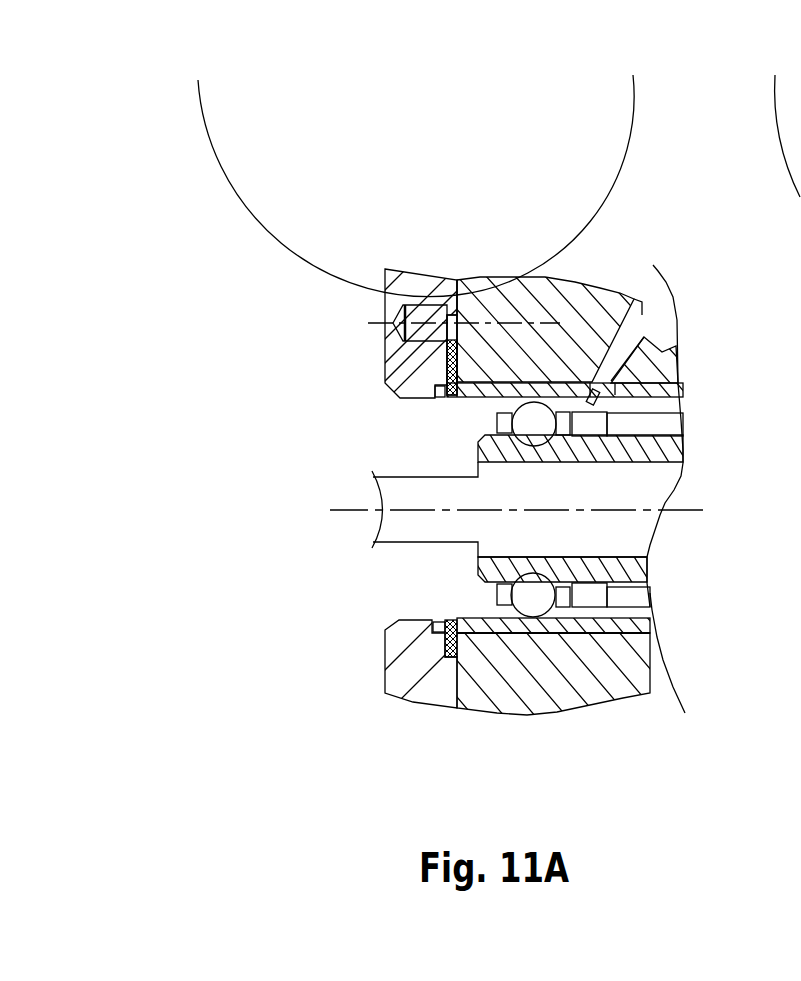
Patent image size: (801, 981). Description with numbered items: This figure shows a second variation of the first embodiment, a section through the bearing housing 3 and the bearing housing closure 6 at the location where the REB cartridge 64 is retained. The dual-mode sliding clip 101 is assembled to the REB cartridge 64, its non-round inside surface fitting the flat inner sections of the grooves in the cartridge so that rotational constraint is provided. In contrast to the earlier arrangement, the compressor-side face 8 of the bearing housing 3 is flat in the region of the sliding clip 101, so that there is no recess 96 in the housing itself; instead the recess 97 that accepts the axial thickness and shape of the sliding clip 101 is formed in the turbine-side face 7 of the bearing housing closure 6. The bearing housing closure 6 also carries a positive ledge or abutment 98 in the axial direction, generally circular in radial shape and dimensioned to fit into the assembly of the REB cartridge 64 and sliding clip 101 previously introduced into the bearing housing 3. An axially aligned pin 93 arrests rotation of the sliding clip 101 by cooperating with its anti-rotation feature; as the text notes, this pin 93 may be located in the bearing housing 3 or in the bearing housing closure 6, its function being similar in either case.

The bearing housing 3 is at (613, 668).
The bearing housing closure 6 is at (412, 656).
The turbine-side face 7 is at (493, 167).
The compressor-side face 8 is at (547, 169).
The REB cartridge 64 is at (642, 615).
The axially aligned pin 93 is at (393, 330).
The recess 96 is at (704, 586).
The recess 97 is at (447, 353).
The positive ledge or abutment 98 is at (691, 372).
The dual-mode sliding clip 101 is at (433, 620).